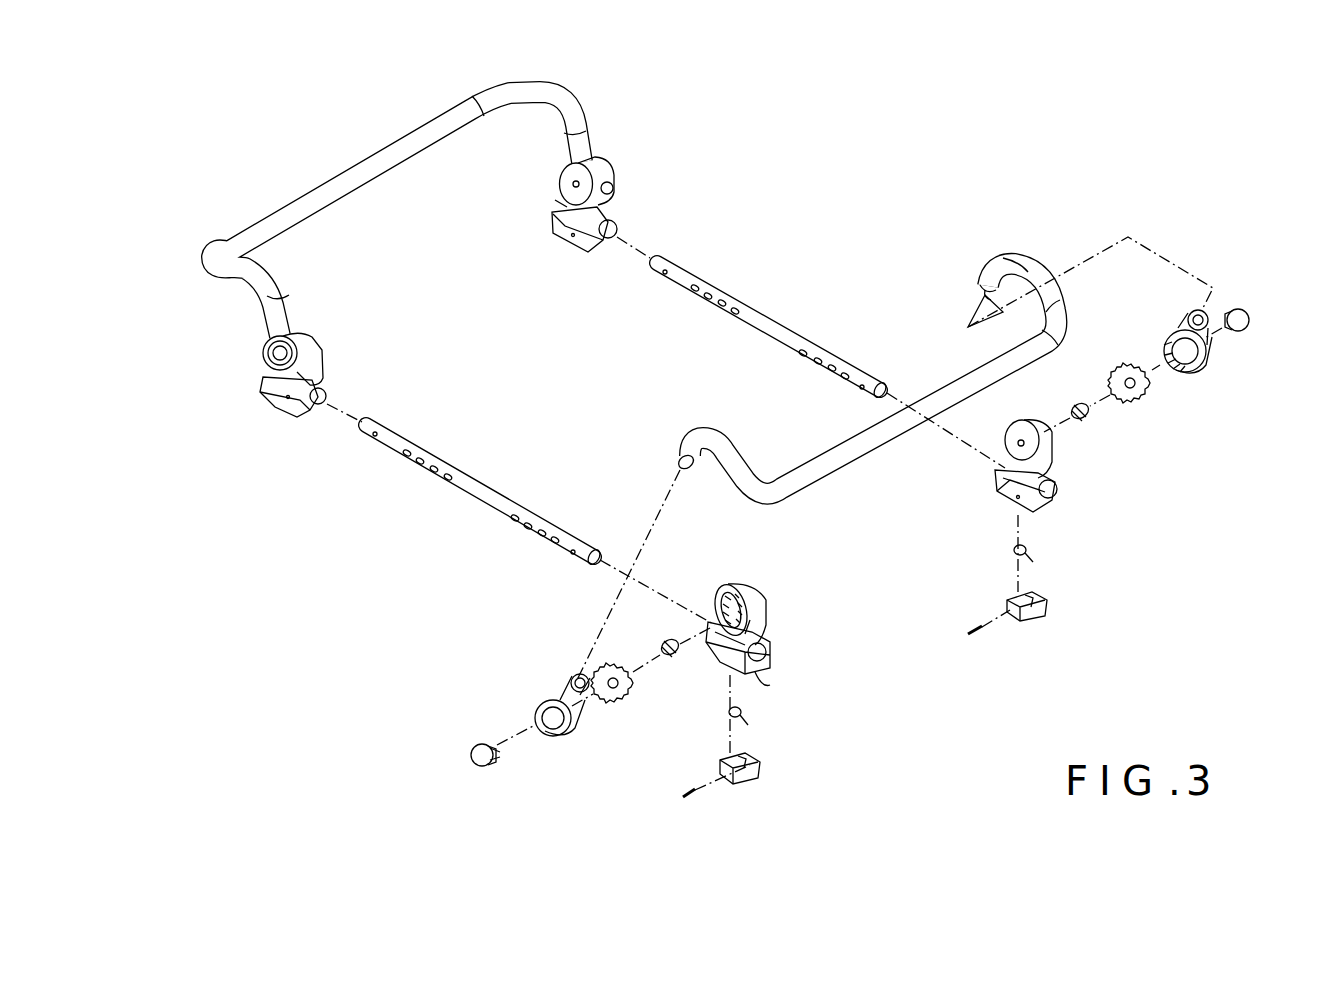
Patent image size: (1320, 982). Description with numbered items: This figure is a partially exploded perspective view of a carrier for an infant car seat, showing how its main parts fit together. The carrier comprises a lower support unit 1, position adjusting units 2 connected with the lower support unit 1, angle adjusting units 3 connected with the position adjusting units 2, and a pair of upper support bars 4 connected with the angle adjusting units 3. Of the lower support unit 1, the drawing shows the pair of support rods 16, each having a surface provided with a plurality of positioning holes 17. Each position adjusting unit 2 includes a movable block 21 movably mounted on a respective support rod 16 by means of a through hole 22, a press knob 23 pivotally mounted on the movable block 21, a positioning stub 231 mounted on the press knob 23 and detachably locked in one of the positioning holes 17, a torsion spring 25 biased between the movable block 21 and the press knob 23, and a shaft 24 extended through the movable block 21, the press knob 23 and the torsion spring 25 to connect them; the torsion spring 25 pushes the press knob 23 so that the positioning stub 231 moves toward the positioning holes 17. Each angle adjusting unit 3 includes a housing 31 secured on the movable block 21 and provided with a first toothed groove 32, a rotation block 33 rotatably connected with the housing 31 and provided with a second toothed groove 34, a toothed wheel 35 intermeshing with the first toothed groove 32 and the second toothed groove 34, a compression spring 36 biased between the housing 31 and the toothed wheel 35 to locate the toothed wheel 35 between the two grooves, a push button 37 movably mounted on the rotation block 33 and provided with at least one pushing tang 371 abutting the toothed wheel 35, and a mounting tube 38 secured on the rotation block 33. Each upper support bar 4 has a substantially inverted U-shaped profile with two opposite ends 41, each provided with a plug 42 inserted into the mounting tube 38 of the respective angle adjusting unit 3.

The lower support unit 1 is at (843, 228).
The position adjusting units 2 is at (465, 245).
The angle adjusting units 3 is at (712, 147).
The upper support bars 4 is at (275, 190).
The support rods 16 is at (790, 330).
The positioning holes 17 is at (735, 310).
The movable block 21 is at (552, 229).
The through hole 22 is at (610, 240).
The press knob 23 is at (580, 257).
The shaft 24 is at (975, 622).
The torsion spring 25 is at (1013, 552).
The housing 31 is at (598, 177).
The first toothed groove 32 is at (752, 606).
The rotation block 33 is at (620, 192).
The second toothed groove 34 is at (1192, 376).
The toothed wheel 35 is at (1147, 401).
The compression spring 36 is at (1090, 420).
The push button 37 is at (272, 357).
The mounting tube 38 is at (1177, 327).
The opposite ends 41 is at (1010, 262).
The plug 42 is at (978, 290).
The positioning stub 231 is at (1045, 615).
The pushing tang 371 is at (487, 745).